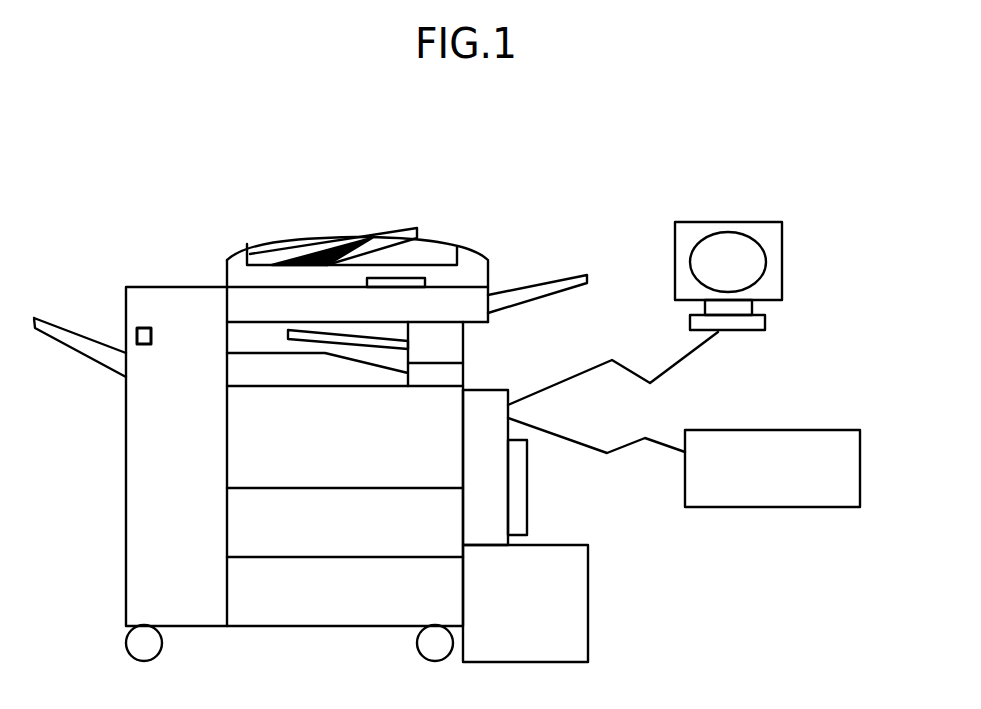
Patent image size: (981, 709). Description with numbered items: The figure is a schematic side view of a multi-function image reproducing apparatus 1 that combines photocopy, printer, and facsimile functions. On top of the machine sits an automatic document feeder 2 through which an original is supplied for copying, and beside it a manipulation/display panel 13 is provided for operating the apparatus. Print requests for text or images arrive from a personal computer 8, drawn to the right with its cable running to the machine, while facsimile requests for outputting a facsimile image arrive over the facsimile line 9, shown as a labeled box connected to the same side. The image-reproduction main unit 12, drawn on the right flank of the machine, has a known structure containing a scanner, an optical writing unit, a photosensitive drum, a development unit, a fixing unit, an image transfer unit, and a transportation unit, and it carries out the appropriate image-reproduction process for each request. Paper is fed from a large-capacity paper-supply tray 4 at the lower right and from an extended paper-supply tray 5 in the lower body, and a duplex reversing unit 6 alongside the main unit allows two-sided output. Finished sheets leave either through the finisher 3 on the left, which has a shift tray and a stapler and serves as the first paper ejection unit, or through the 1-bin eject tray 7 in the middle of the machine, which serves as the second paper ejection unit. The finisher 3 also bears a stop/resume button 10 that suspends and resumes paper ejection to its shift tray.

The multi-function image reproducing apparatus 1 is at (585, 240).
The automatic document feeder 2 is at (480, 257).
The finisher 3 is at (126, 413).
The large-capacity paper-supply tray 4 is at (572, 603).
The extended paper-supply tray 5 is at (313, 612).
The duplex reversing unit 6 is at (495, 450).
The 1-bin eject tray 7 is at (396, 360).
The personal computer 8 is at (782, 262).
The facsimile line 9 is at (860, 460).
The stop/resume button 10 is at (145, 327).
The image-reproduction main unit 12 is at (430, 400).
The manipulation/display panel 13 is at (421, 282).